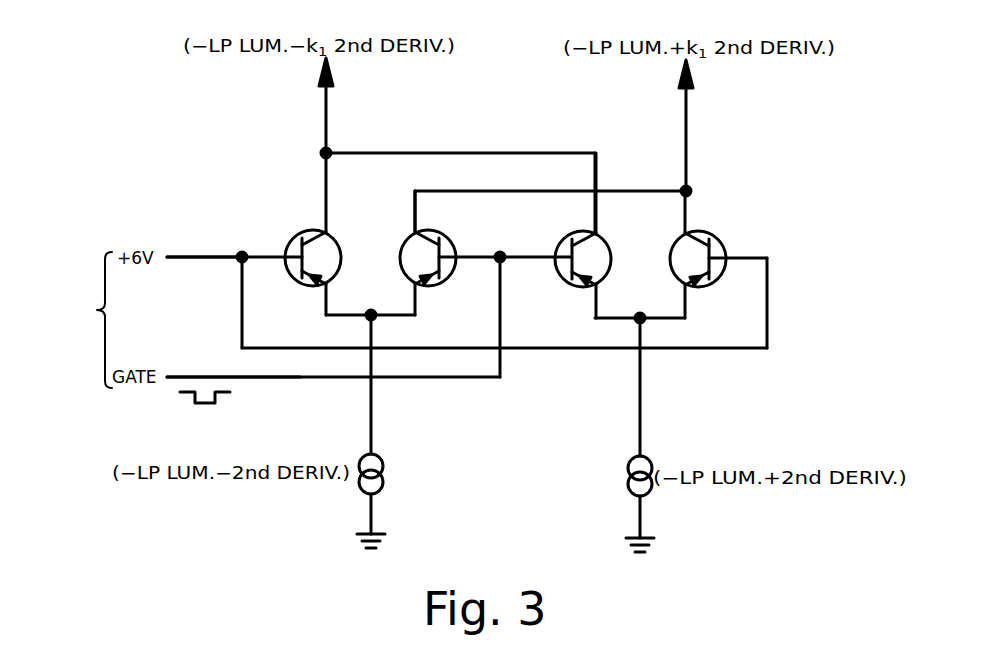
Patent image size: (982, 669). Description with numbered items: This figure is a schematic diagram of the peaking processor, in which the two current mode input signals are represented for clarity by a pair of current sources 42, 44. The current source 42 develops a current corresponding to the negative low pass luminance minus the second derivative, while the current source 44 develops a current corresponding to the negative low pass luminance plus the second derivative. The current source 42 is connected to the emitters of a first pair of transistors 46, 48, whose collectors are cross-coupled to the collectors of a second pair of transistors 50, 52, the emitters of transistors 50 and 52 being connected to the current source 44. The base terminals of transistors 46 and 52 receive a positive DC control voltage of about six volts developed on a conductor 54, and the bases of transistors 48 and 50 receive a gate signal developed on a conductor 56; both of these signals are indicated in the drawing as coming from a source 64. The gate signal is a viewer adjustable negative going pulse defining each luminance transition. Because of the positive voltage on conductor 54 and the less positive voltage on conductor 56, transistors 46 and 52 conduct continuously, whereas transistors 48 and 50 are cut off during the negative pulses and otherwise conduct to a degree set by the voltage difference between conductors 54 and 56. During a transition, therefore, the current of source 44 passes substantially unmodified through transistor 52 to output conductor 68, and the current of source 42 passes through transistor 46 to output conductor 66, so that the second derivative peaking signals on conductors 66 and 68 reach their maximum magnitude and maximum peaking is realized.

The current source 42 is at (381, 458).
The current source 44 is at (628, 462).
The transistor 46 is at (291, 234).
The transistor 48 is at (403, 234).
The transistor 50 is at (604, 241).
The transistor 52 is at (716, 236).
The conductor 54 is at (186, 255).
The conductor 56 is at (190, 376).
The source of +6V and gate signals 64 is at (72, 320).
The output conductor 66 is at (325, 112).
The output conductor 68 is at (687, 110).